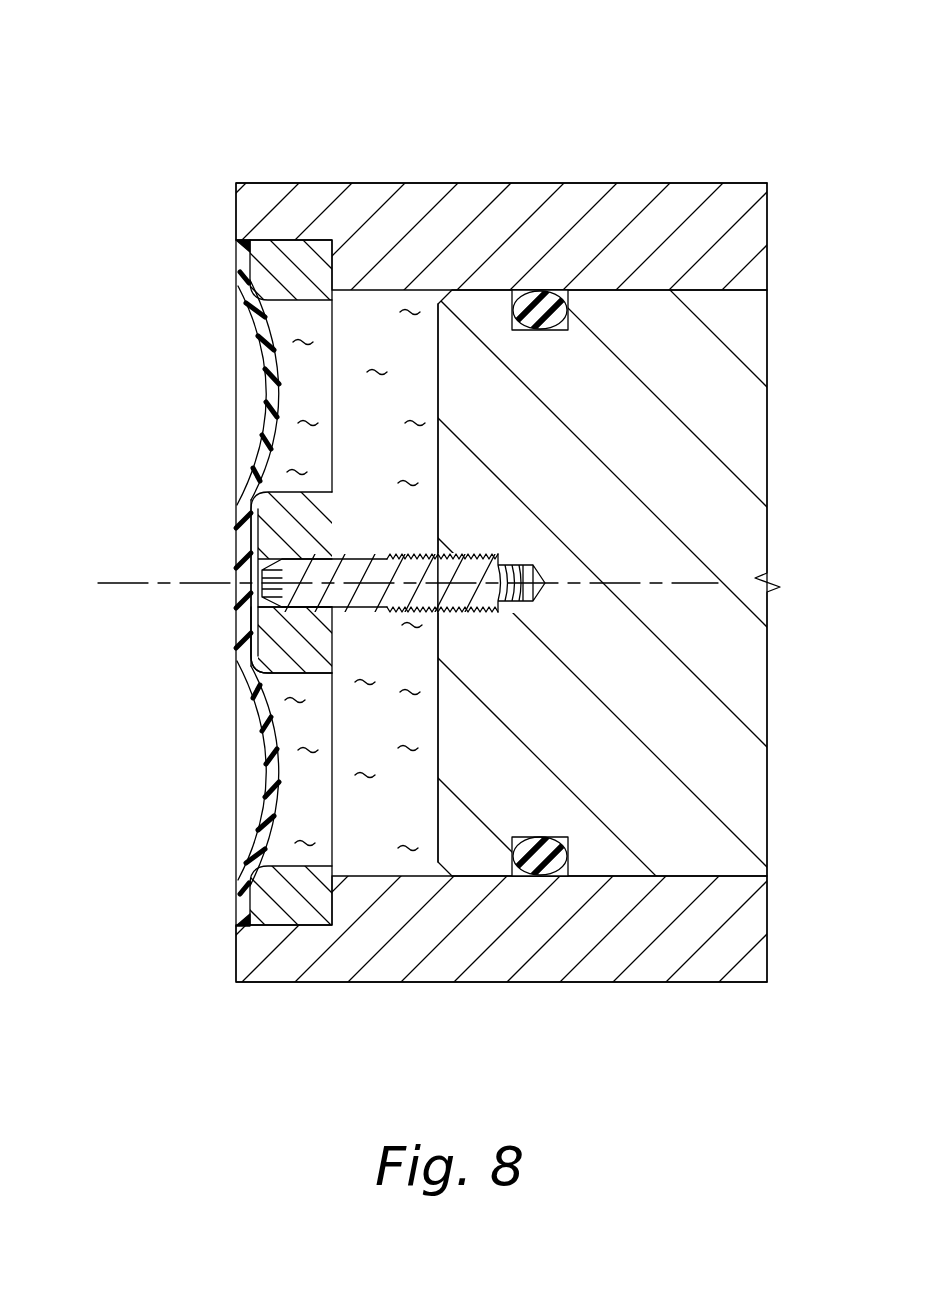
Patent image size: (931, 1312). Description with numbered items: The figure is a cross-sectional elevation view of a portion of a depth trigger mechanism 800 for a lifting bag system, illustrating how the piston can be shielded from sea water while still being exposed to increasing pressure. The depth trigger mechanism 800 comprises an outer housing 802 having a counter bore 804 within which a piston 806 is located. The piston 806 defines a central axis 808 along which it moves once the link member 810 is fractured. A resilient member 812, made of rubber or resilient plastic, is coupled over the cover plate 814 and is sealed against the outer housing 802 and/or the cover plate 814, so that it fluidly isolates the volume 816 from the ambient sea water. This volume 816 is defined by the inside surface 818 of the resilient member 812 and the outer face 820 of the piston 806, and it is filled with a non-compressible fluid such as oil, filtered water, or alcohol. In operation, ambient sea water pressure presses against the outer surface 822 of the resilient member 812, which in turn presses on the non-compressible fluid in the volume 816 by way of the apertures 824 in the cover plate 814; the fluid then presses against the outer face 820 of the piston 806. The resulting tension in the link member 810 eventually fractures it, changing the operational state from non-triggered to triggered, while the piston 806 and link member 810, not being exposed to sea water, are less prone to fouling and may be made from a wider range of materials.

The depth trigger mechanism 800 is at (175, 45).
The outer housing 802 is at (528, 190).
The counter bore 804 is at (387, 873).
The piston 806 is at (634, 538).
The central axis 808 is at (123, 583).
The link member 810 is at (372, 568).
The resilient member 812 is at (243, 265).
The cover plate 814 is at (320, 650).
The volume 816 is at (400, 358).
The inside surface 818 is at (280, 805).
The outer face 820 is at (438, 399).
The outer surface 822 is at (272, 402).
The apertures 824 is at (320, 448).